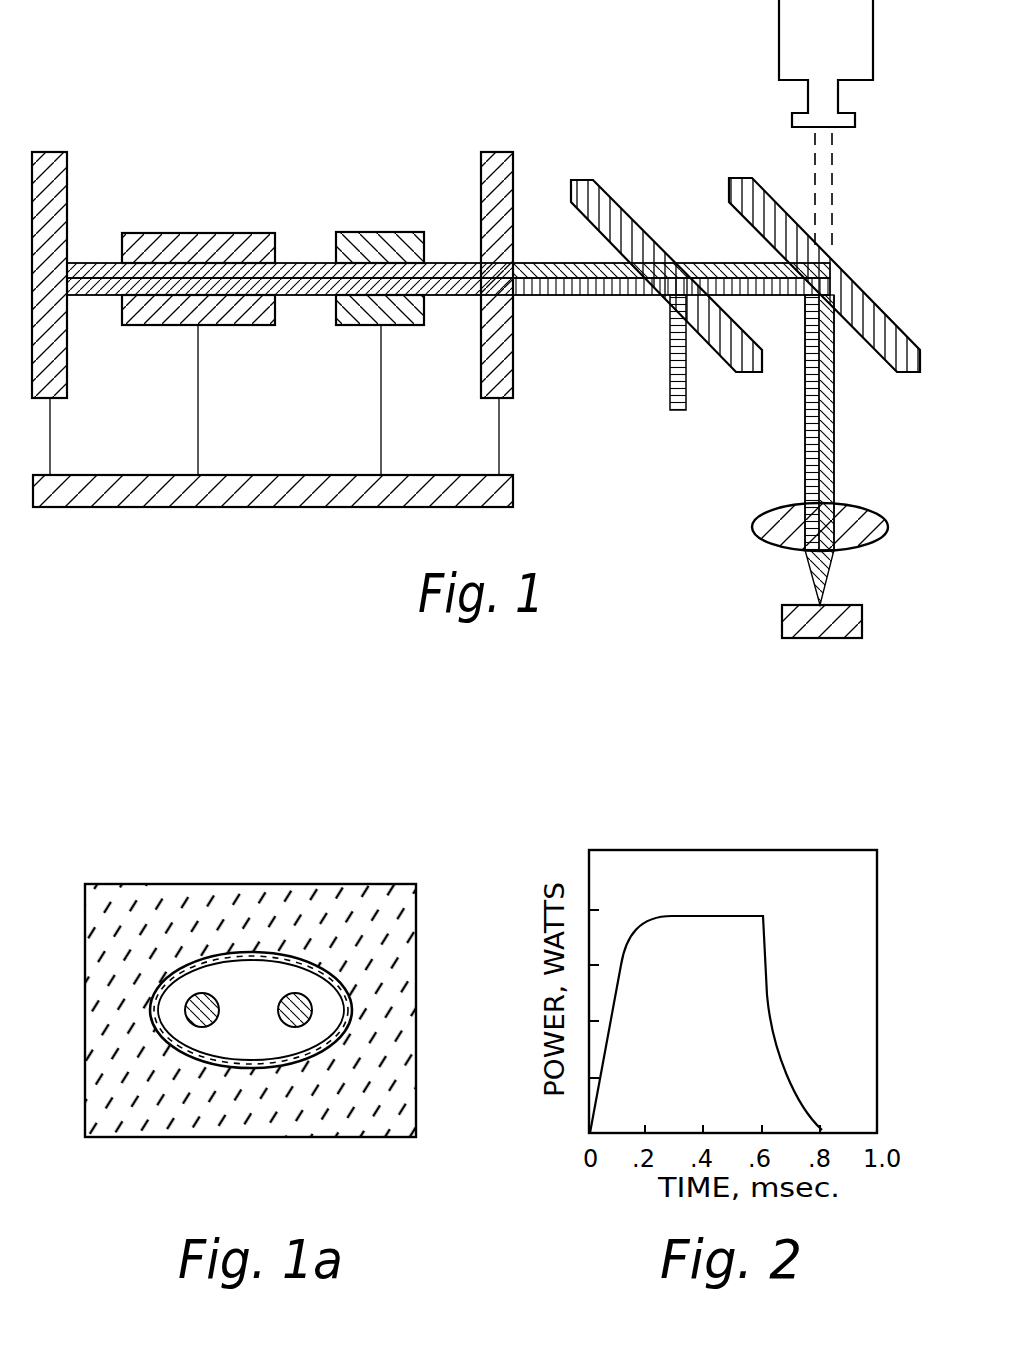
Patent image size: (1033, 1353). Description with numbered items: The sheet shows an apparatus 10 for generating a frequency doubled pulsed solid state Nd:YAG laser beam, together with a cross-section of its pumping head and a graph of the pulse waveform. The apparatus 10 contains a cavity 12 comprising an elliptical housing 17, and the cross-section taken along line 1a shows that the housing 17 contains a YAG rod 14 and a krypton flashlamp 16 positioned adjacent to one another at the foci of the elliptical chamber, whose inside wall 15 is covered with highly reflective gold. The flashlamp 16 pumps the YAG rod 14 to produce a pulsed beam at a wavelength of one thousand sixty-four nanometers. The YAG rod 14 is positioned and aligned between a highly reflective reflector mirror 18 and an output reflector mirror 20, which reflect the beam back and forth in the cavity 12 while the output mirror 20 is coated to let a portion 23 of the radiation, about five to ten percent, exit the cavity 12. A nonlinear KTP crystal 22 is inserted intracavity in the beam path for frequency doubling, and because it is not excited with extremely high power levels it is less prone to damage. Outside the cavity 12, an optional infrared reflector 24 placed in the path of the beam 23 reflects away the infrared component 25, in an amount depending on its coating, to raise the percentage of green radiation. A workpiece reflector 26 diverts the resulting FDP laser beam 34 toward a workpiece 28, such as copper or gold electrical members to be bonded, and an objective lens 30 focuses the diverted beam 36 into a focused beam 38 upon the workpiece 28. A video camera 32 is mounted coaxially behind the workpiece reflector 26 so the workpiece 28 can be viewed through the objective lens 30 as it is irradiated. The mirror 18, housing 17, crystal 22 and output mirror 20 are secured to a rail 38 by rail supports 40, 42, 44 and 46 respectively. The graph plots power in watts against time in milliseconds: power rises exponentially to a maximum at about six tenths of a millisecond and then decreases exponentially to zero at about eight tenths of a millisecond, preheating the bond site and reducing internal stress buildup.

In FIG. 1, the apparatus 10 is at (105, 160).
In FIG. 1, the cavity 12 is at (300, 195).
In FIG. 1A, the YAG rod 14 is at (197, 993).
In FIG. 1A, the inside wall 15 is at (215, 1068).
In FIG. 1A, the flashlamp 16 is at (290, 993).
In FIG. 1, the elliptical housing 17 is at (232, 233).
In FIG. 1A, the elliptical housing 17 is at (375, 884).
In FIG. 1, the reflector mirror 18 is at (52, 152).
In FIG. 1, the line 1A—1A 1a is at (160, 166).
In FIG. 1, the output reflector mirror 20 is at (490, 152).
In FIG. 1, the KTP crystal 22 is at (384, 232).
In FIG. 1, the portion of radiation 23 is at (570, 297).
In FIG. 1, the infrared reflector 24 is at (576, 180).
In FIG. 1, the 1064 nm wavelength component 25 is at (668, 392).
In FIG. 1, the workpiece reflector 26 is at (735, 180).
In FIG. 1, the workpiece 28 is at (782, 613).
In FIG. 1, the objective lens 30 is at (752, 530).
In FIG. 1, the video camera 32 is at (779, 22).
In FIG. 1, the FDP Nd:YAG laser beam 34 is at (735, 262).
In FIG. 1, the FDP Nd:YAG laser beam 36 is at (805, 435).
In FIG. 1, the rail / focused laser beam 38 is at (300, 508).
In FIG. 1, the rail support 40 is at (50, 440).
In FIG. 1, the rail support 42 is at (198, 440).
In FIG. 1, the rail support 44 is at (381, 440).
In FIG. 1, the rail support 46 is at (499, 440).